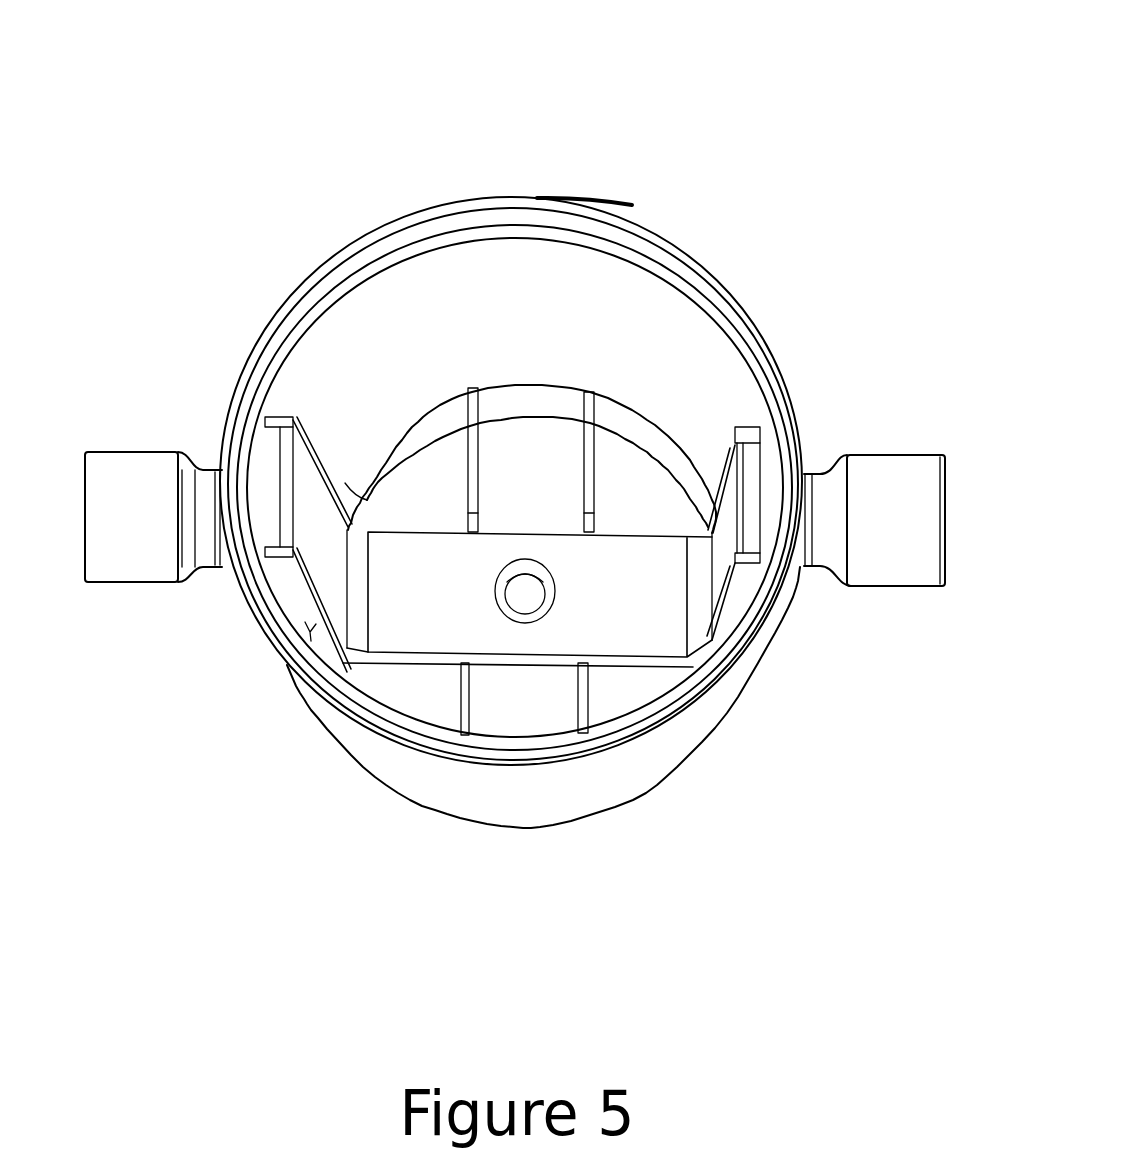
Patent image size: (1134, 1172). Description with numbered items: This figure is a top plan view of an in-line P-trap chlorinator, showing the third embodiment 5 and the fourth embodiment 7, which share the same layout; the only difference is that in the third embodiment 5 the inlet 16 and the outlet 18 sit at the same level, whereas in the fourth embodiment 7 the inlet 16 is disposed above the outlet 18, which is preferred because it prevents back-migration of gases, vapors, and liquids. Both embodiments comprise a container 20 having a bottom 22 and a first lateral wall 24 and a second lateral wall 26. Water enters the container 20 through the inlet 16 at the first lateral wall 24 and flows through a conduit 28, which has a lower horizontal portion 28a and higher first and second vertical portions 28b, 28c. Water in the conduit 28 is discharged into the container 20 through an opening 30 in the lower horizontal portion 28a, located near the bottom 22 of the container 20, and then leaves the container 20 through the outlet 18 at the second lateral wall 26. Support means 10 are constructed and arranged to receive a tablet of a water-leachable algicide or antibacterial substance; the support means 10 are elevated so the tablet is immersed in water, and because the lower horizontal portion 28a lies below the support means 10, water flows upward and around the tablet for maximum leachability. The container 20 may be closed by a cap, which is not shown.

The third embodiment of in-line P-trap chlorinator 5 is at (512, 154).
The fourth embodiment of in-line P-trap chlorinator 7 is at (637, 192).
The support means 10 is at (593, 482).
The inlet 16 is at (892, 453).
The outlet 18 is at (133, 452).
The container 20 is at (729, 767).
The bottom 22 is at (400, 792).
The first lateral wall 24 is at (787, 390).
The second lateral wall 26 is at (250, 610).
The conduit 28 is at (618, 697).
The lower horizontal portion 28a is at (390, 662).
The first vertical portion 28b is at (724, 589).
The second vertical portion 28c is at (308, 596).
The opening 30 is at (526, 600).